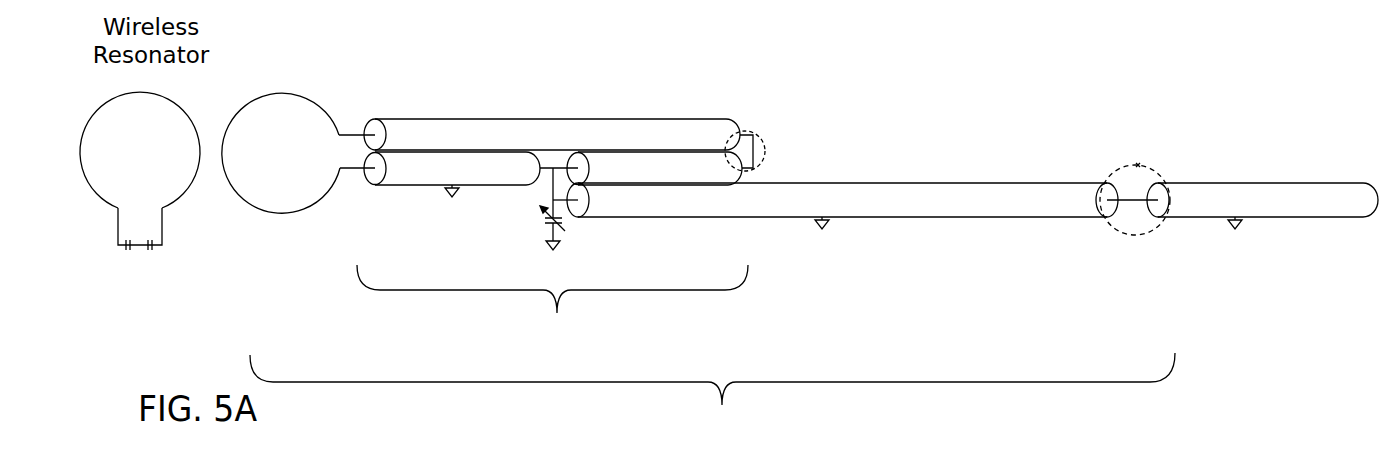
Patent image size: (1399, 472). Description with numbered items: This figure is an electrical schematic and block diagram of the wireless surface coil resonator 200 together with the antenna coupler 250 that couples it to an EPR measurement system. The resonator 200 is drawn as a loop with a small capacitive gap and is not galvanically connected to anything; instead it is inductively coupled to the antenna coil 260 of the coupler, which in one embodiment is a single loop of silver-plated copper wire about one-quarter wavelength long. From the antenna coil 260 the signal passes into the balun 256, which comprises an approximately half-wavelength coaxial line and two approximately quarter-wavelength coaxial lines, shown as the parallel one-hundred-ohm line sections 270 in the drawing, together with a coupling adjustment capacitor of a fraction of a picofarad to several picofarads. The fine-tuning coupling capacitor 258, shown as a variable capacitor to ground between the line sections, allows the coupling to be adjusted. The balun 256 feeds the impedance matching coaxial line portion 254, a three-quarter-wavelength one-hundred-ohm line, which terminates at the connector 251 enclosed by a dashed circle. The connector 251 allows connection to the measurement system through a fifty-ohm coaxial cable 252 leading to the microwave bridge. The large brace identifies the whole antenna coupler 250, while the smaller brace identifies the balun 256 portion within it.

The resonator 200 is at (182, 205).
The antenna coil 260 is at (280, 210).
The transmission line segments (100 ohm) 270 is at (398, 132).
The fine-tuning coupling capacitor 258 is at (563, 216).
The impedance matching coaxial line portion 254 is at (902, 202).
The connector 251 is at (1165, 217).
The 50-ohm coaxial cable 252 is at (1273, 218).
The balun 256 is at (552, 309).
The antenna coupler 250 is at (712, 399).